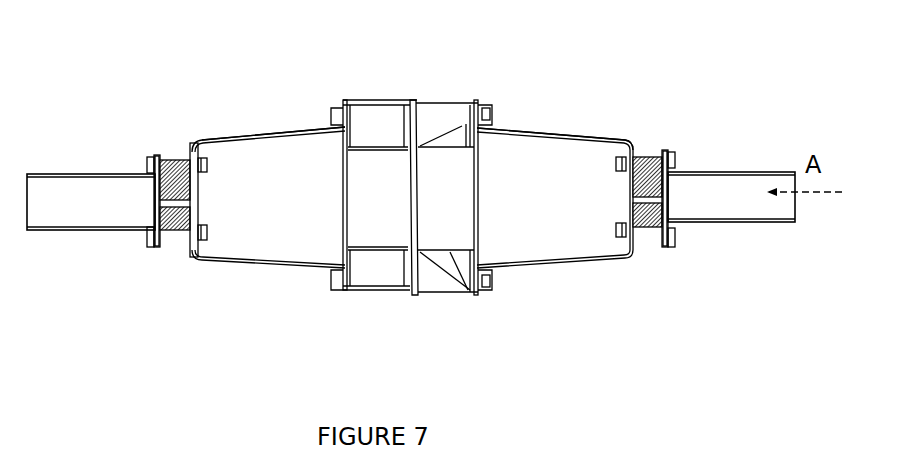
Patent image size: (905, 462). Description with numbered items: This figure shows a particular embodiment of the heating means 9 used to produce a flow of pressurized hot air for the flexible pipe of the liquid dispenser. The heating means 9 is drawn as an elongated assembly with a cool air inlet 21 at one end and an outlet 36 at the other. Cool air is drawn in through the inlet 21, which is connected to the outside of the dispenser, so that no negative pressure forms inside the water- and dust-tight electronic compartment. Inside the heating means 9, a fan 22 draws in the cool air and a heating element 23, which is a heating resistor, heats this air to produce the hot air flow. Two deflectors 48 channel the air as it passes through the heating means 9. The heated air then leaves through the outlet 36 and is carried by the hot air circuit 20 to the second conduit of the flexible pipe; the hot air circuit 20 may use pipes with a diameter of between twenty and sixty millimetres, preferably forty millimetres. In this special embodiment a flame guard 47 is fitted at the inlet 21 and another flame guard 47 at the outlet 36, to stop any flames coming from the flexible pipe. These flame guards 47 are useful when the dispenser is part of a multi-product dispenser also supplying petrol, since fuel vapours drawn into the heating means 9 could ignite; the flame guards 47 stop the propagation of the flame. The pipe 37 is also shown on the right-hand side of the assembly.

The heating means 9 is at (235, 136).
The hot air circuit 20 is at (68, 229).
The cool air inlet 21 is at (686, 158).
The fan 22 is at (440, 293).
The heating element 23 is at (368, 285).
The outlet 36 is at (118, 155).
The second pipe 37 is at (713, 223).
The flame guard 47 is at (172, 243).
The deflector 48 is at (278, 131).